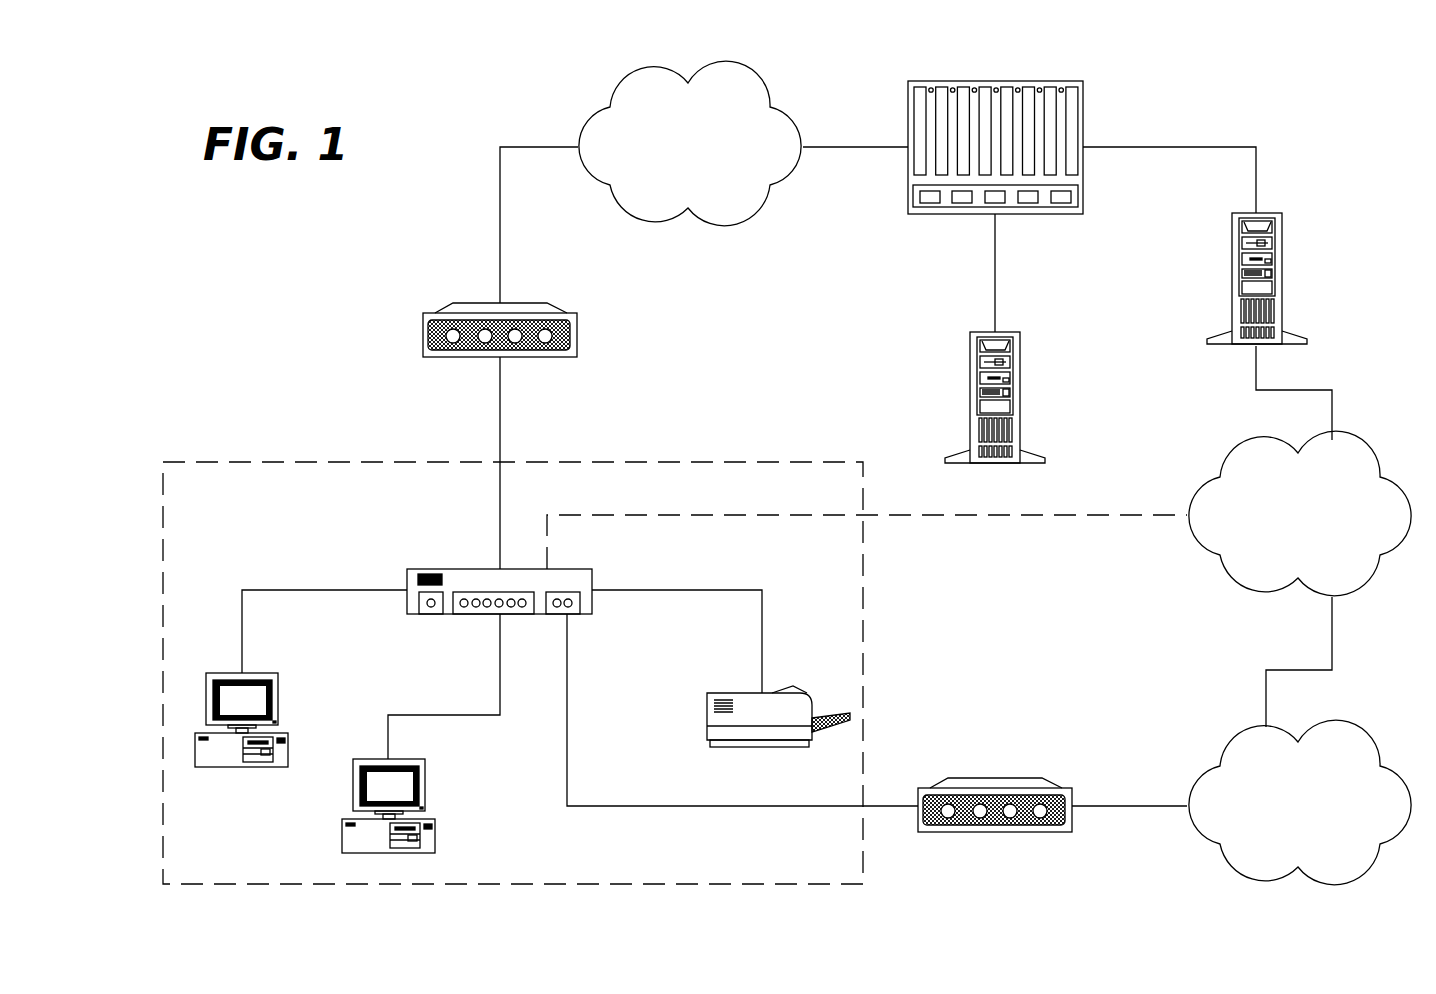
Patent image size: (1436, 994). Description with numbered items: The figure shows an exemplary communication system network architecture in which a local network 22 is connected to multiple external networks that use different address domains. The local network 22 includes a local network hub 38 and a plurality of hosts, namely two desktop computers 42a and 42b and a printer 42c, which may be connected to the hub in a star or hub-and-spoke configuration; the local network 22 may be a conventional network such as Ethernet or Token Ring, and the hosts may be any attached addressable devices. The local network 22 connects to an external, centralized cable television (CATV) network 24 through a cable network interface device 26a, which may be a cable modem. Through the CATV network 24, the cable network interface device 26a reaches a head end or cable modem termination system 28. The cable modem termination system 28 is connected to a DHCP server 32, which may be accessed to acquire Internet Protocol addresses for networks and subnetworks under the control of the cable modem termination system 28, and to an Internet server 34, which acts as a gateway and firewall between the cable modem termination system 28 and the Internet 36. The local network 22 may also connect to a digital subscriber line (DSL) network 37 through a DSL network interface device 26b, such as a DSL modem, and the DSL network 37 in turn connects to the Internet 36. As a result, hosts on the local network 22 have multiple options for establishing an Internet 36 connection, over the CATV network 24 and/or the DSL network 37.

The local network 22 is at (864, 675).
The CATV network 24 is at (676, 175).
The cable network interface device 26a is at (577, 330).
The DSL network interface device 26b is at (993, 779).
The cable modem termination system 28 is at (1010, 81).
The DHCP server 32 is at (1020, 395).
The Internet server 34 is at (1281, 277).
The Internet 36 is at (1286, 545).
The DSL network 37 is at (1286, 834).
The local network hub 38 is at (432, 569).
The desktop computer 42a is at (288, 742).
The desktop computer 42b is at (435, 828).
The printer 42c is at (707, 718).